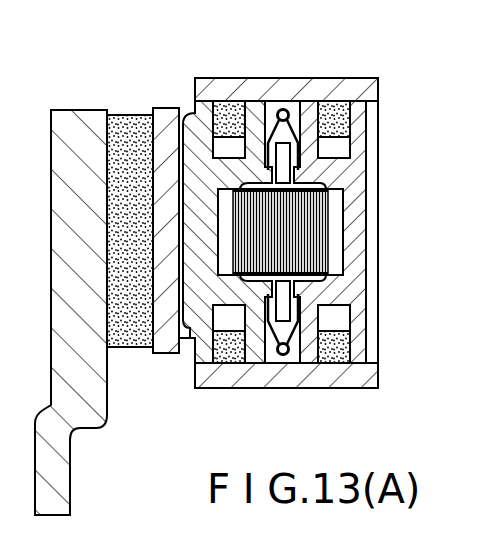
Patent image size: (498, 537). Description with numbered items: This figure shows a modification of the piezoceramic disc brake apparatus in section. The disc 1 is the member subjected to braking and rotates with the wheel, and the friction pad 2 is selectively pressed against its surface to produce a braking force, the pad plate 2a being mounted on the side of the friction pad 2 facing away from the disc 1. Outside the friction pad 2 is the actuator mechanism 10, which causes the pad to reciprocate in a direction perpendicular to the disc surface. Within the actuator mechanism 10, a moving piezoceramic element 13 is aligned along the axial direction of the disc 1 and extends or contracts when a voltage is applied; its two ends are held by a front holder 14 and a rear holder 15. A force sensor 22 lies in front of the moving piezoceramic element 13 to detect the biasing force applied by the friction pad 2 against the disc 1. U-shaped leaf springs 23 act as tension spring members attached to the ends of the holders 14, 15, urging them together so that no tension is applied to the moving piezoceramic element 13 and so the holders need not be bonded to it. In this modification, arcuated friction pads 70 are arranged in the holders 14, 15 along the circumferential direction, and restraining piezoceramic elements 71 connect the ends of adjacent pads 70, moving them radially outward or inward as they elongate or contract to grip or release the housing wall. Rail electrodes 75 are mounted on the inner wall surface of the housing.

The disc 1 is at (82, 125).
The friction pad 2 is at (132, 122).
The pad plate 2a is at (168, 123).
The actuator mechanism 10 is at (341, 77).
The moving piezoceramic element 13 is at (318, 238).
The front holder 14 is at (188, 346).
The rear holder 15 is at (357, 267).
The force sensor 22 is at (232, 248).
The U-shaped leaf spring 23 is at (281, 110).
The arcuated friction pad 70 is at (235, 125).
The restraining piezoceramic element 71 is at (222, 142).
The rail electrode 75 is at (372, 89).